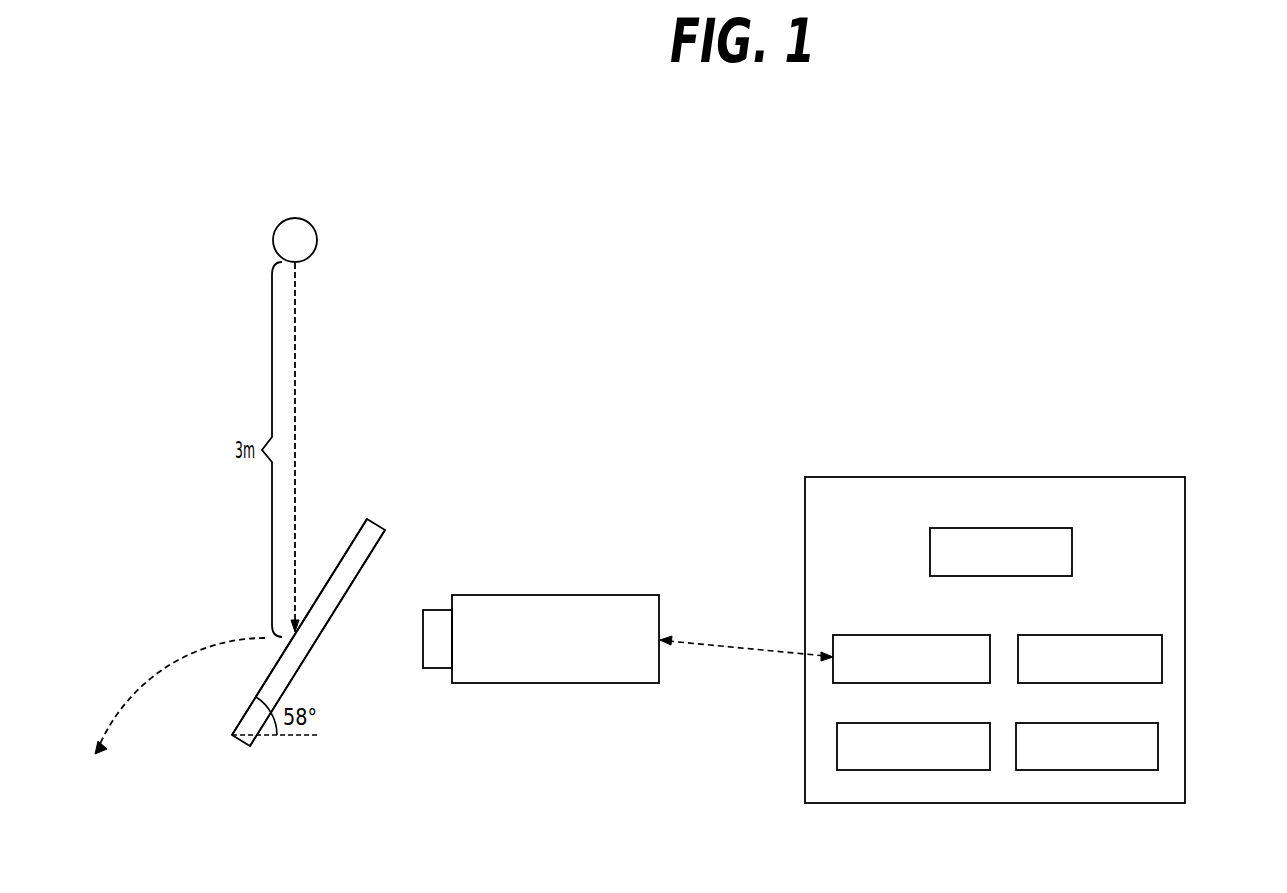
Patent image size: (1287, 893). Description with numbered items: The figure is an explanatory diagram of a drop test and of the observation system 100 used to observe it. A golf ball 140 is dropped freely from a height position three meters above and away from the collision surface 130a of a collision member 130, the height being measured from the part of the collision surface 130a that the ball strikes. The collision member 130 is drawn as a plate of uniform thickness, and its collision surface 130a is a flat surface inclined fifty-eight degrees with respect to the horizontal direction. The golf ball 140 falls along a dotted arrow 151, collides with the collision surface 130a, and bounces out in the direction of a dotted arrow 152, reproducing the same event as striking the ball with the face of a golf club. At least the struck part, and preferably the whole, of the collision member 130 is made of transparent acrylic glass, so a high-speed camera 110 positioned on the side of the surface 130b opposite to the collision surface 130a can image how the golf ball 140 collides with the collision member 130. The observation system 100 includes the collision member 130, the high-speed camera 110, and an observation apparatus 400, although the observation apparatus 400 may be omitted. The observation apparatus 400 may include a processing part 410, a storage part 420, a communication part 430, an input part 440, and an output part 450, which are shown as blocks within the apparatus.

The observation system 100 is at (715, 373).
The high-speed camera 110 is at (592, 594).
The collision member 130 is at (377, 521).
The collision surface 130a is at (338, 562).
The surface opposite to the collision surface 130b is at (378, 547).
The golf ball 140 is at (302, 218).
The dotted arrow 151 is at (297, 350).
The dotted arrow 152 is at (177, 660).
The observation apparatus 400 is at (1008, 476).
The processing part 410 is at (1073, 553).
The storage part 420 is at (1162, 660).
The communication part 430 is at (853, 635).
The input part 440 is at (837, 743).
The output part 450 is at (1158, 745).